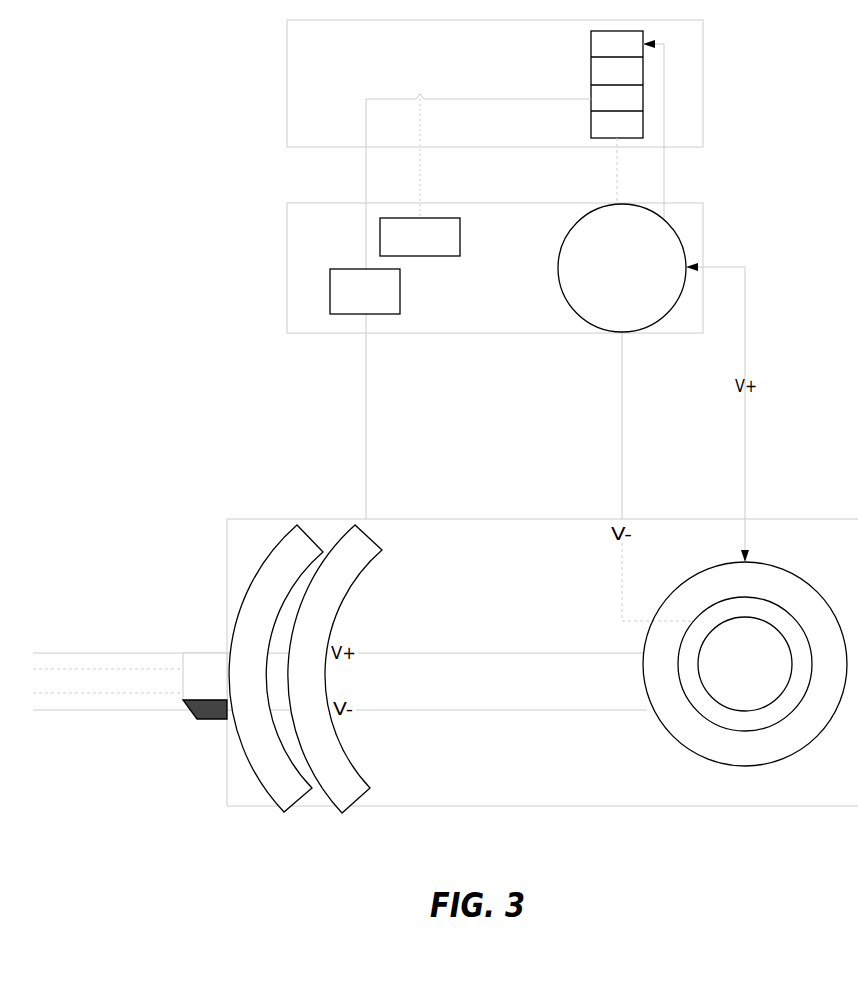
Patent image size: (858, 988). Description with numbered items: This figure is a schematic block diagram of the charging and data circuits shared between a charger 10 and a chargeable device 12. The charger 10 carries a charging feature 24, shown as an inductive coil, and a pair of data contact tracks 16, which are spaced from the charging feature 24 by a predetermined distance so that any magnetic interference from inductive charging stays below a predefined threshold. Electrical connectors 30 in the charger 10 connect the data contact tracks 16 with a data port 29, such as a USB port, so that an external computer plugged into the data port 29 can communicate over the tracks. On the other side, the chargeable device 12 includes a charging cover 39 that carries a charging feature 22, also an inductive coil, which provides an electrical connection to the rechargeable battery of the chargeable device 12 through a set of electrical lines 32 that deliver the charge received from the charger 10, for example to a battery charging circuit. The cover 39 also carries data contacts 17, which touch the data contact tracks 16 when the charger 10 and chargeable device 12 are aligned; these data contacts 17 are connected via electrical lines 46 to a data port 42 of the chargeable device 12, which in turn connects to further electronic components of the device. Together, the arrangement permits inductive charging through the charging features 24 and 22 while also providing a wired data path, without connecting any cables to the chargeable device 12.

The charger 10 is at (493, 519).
The chargeable device 12 is at (495, 83).
The data contact tracks 16 is at (340, 681).
The data contacts 17 is at (395, 266).
The charging feature 22 is at (622, 268).
The charging feature 24 is at (745, 664).
The data port 29 is at (210, 662).
The electrical connectors 30 is at (295, 628).
The electrical lines 32 is at (623, 162).
The charging cover 39 is at (495, 268).
The data port 42 is at (644, 86).
The electrical lines 46 is at (413, 190).